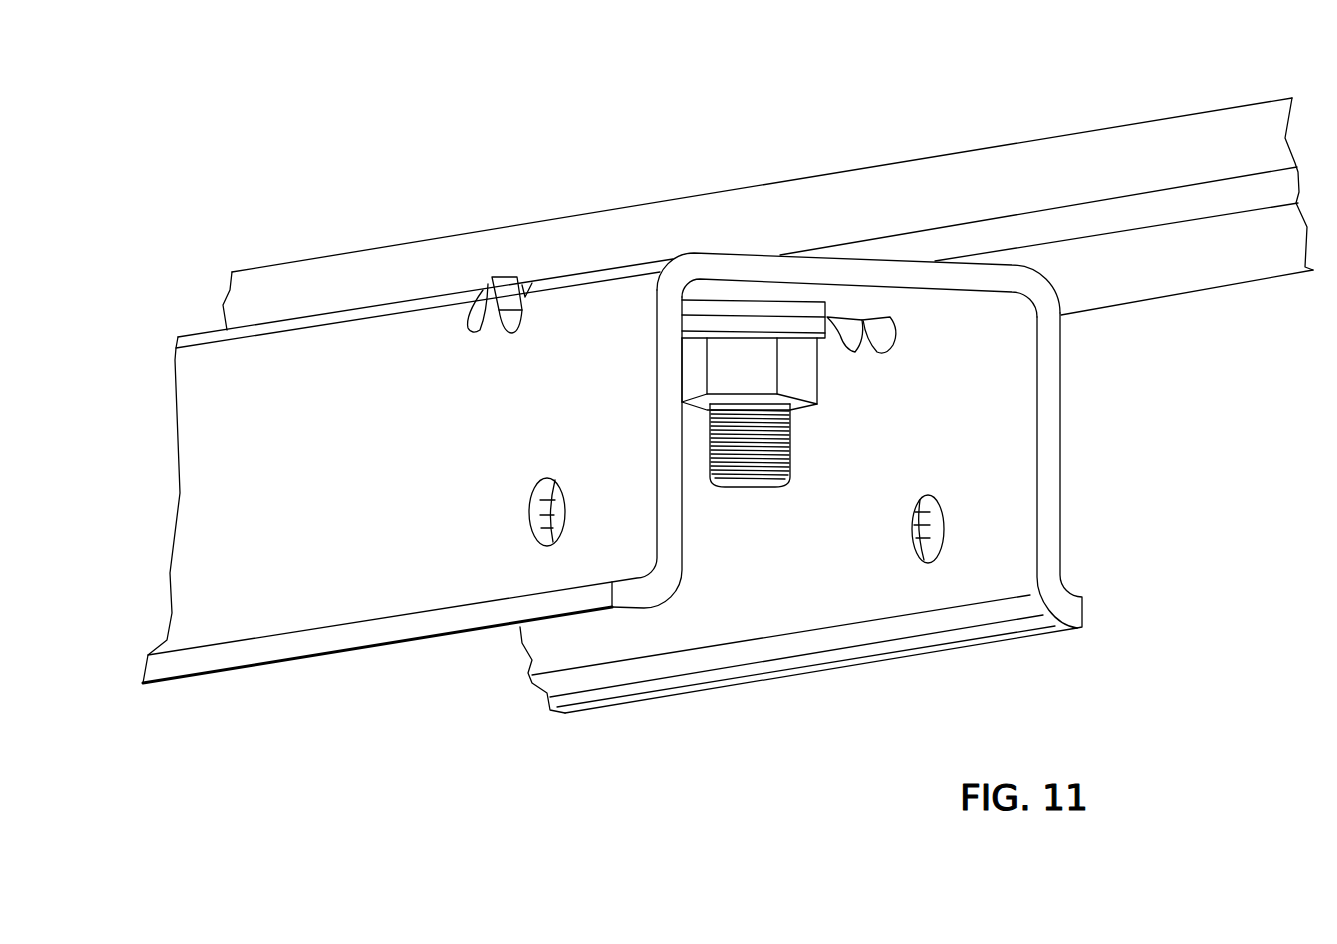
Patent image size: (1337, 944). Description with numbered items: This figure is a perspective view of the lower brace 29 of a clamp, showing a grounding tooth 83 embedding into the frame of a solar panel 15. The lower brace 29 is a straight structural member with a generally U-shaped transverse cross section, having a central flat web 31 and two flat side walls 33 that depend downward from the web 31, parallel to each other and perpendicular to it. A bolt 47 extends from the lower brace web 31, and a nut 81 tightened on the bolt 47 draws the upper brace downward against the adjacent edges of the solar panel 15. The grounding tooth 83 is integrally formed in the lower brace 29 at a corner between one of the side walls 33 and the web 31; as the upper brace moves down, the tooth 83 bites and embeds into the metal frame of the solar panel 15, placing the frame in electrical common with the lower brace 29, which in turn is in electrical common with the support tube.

The solar panel 15 is at (1000, 175).
The lower brace 29 is at (1085, 354).
The web 31 is at (895, 272).
The side wall 33 is at (1047, 533).
The bolt 47 is at (790, 458).
The nut 81 is at (797, 373).
The grounding tooth 83 is at (507, 285).